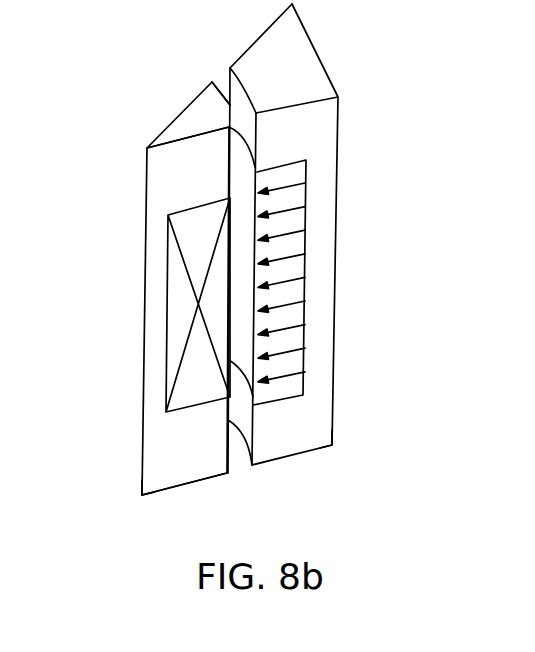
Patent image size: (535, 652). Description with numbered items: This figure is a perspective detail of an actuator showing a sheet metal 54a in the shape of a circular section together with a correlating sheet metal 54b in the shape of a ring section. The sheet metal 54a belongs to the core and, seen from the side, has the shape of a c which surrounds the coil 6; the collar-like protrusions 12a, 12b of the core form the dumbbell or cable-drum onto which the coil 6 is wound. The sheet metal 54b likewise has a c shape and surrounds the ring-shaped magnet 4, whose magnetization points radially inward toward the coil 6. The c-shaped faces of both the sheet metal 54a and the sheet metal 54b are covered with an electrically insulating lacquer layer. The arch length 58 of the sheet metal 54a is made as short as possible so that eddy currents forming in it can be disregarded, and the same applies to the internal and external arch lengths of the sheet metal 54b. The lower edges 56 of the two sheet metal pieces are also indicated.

The ring-shaped magnet 4 is at (292, 305).
The electrically conductive coil 6 is at (197, 397).
The collar-like protrusion 12a is at (173, 151).
The collar-like protrusion 12b is at (186, 476).
The sheet metal in the shape of a circular section 54a is at (153, 201).
The sheet metal in the shape of a ring section 54b is at (327, 184).
The bottom edge 56 is at (147, 437).
The arch length 58 is at (227, 102).